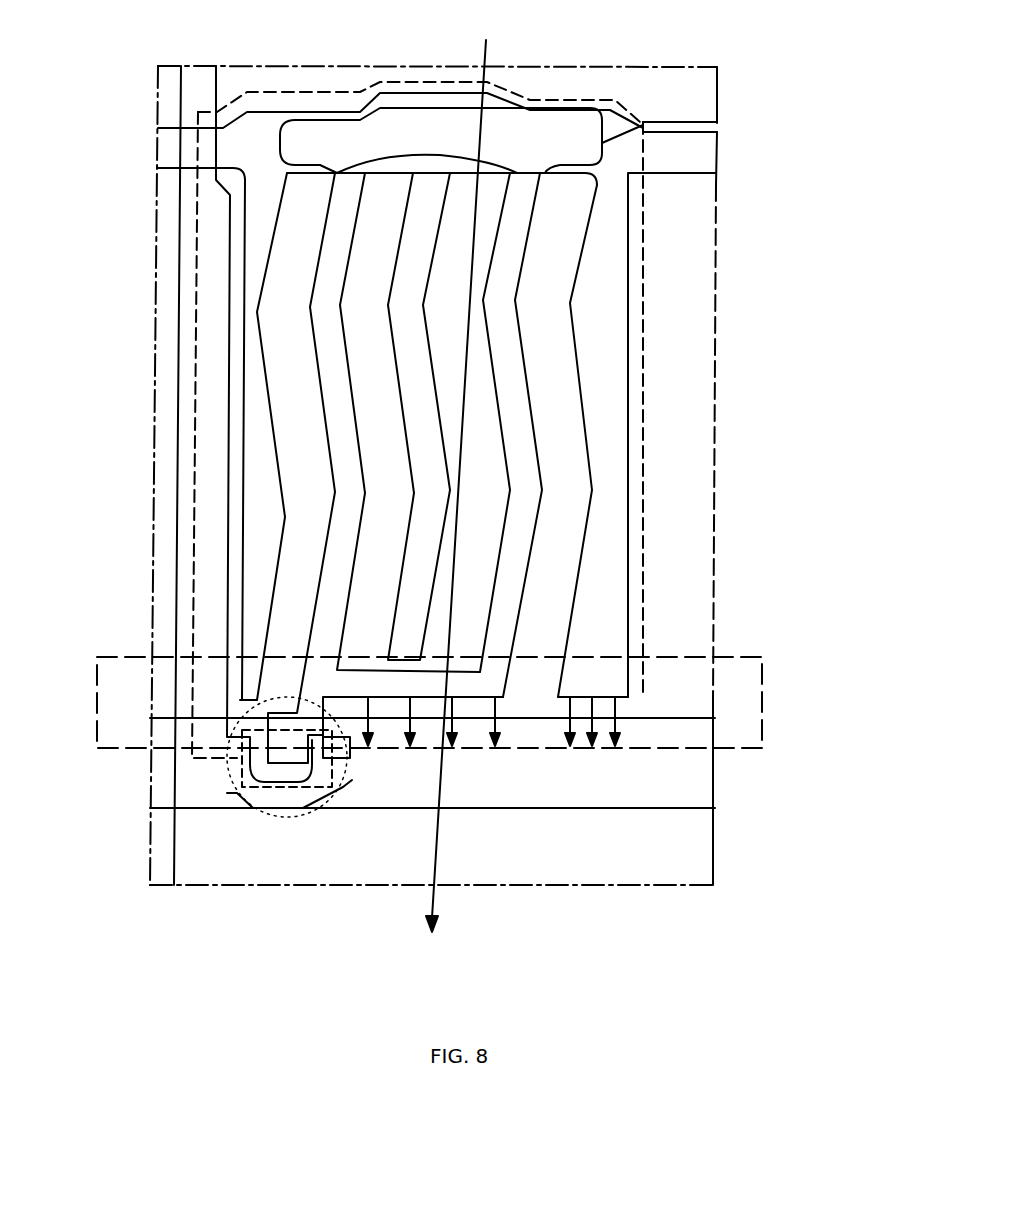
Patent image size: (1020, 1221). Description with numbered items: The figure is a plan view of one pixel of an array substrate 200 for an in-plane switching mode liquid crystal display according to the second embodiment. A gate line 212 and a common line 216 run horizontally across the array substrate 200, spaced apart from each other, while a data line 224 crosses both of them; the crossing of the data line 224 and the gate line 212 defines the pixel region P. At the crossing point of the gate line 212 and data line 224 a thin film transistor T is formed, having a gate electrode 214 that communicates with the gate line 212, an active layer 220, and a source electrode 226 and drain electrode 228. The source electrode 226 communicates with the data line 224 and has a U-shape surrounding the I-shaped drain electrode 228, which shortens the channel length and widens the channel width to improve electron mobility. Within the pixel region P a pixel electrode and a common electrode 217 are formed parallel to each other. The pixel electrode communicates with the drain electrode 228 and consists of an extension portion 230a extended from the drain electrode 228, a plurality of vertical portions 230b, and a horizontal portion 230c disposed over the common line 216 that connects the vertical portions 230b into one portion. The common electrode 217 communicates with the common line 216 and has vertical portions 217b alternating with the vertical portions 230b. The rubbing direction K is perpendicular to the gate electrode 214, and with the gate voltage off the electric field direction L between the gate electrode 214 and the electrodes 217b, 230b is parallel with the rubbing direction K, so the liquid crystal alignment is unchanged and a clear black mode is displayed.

The array substrate 200 is at (713, 547).
The gate line 212 is at (625, 812).
The gate electrode 214 is at (293, 723).
The common line 216 is at (626, 112).
The common electrode 217 is at (569, 436).
The vertical portions of the common electrode 217b is at (265, 370).
The active layer 220 is at (340, 758).
The data line 224 is at (177, 536).
The source electrode 226 is at (277, 800).
The drain electrode 228 is at (298, 793).
The extension portion 230a is at (497, 676).
The vertical portions of the pixel electrode 230b is at (513, 583).
The horizontal portion 230c is at (643, 127).
The electric field direction L is at (615, 712).
The rubbing direction K is at (434, 908).
The pixel region P is at (185, 380).
The thin film transistor T is at (337, 795).